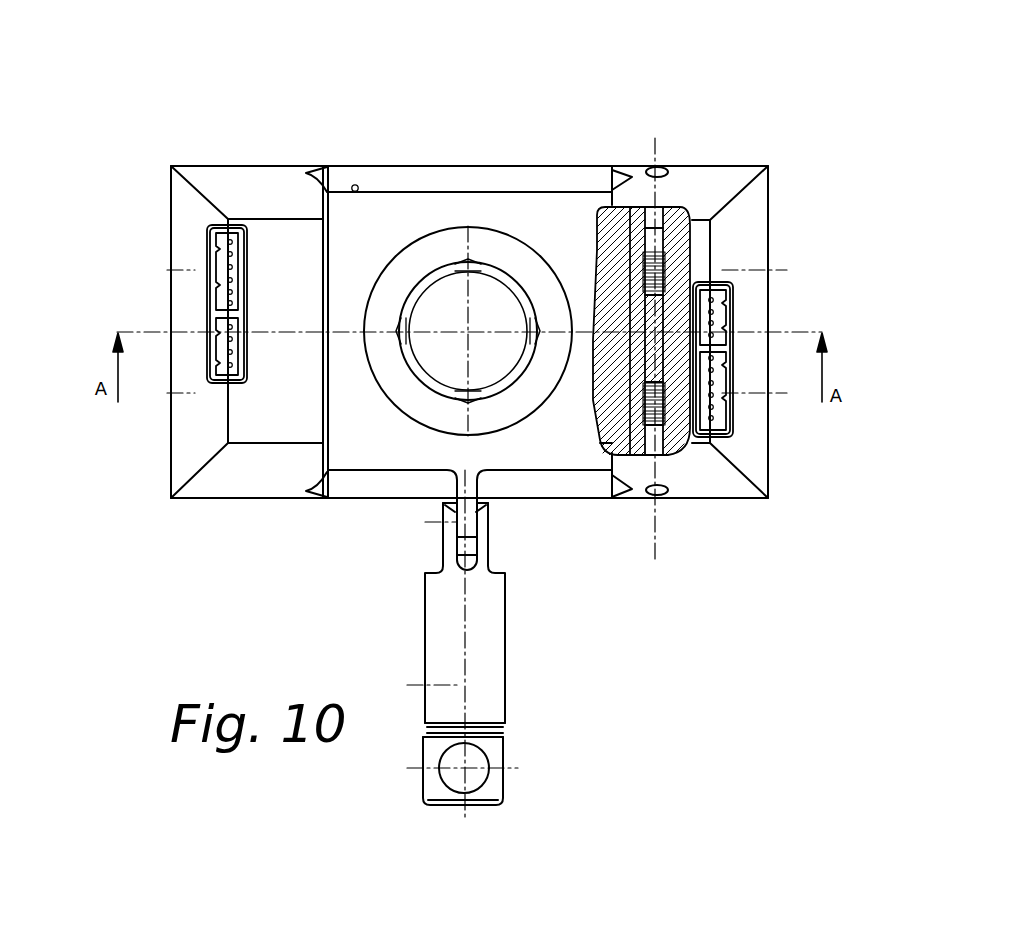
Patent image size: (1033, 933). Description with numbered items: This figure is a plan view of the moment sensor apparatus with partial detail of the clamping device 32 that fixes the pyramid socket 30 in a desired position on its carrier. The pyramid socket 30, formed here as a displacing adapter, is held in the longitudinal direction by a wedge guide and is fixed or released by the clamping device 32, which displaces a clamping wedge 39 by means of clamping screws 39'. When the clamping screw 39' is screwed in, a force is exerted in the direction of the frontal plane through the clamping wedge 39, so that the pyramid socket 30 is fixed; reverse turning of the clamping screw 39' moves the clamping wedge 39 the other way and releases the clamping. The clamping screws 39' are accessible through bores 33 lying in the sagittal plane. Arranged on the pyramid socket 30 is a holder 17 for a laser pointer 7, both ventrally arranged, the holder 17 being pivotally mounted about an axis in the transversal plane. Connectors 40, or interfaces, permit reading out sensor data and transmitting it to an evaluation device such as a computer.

The laser pointer 7 is at (477, 765).
The holder 17 is at (492, 653).
The pyramid socket 30 is at (418, 263).
The clamping device 32 is at (700, 204).
The bore 33 is at (666, 500).
The clamping wedge 39 is at (737, 307).
The clamping screw 39' is at (730, 472).
The connector 40 is at (217, 267).